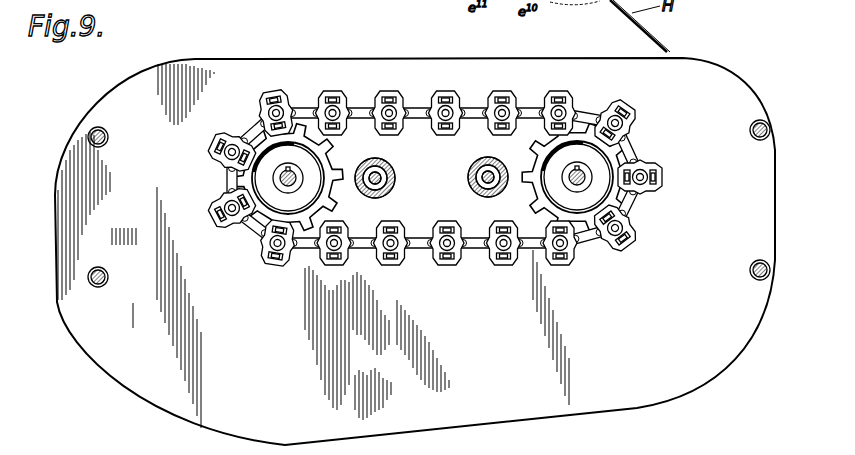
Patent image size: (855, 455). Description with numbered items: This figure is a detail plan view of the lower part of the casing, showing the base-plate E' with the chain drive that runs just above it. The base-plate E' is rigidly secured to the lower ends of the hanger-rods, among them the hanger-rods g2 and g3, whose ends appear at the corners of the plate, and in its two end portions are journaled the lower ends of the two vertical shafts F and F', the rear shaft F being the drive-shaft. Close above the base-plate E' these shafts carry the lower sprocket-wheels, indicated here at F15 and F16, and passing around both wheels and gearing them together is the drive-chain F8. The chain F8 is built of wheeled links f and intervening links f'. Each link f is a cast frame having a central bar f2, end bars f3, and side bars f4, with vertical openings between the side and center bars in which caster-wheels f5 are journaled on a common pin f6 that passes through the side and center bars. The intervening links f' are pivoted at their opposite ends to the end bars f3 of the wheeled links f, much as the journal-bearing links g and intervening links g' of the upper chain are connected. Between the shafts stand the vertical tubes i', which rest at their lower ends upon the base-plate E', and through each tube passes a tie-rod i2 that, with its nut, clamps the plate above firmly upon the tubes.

The base-plate E' is at (415, 251).
The journal-bearing link g is at (113, 135).
The intervening link g' is at (745, 127).
The hanger-rod g2 is at (110, 275).
The hanger-rod g3 is at (752, 267).
The drive-shaft F is at (257, 178).
The vertical shaft F' is at (600, 176).
The disk of sprocket wheel F15 is at (272, 202).
The disk of sprocket wheel F16 is at (598, 167).
The drive-chain F8 is at (420, 248).
The wheeled link f is at (504, 261).
The intervening link f' is at (446, 203).
The central bar f2 is at (398, 106).
The end bar f3 is at (359, 130).
The side bar f4 is at (386, 99).
The caster-wheel f5 is at (384, 118).
The pin f6 is at (397, 122).
The vertical tube i' is at (431, 177).
The tie-rod i2 is at (388, 183).